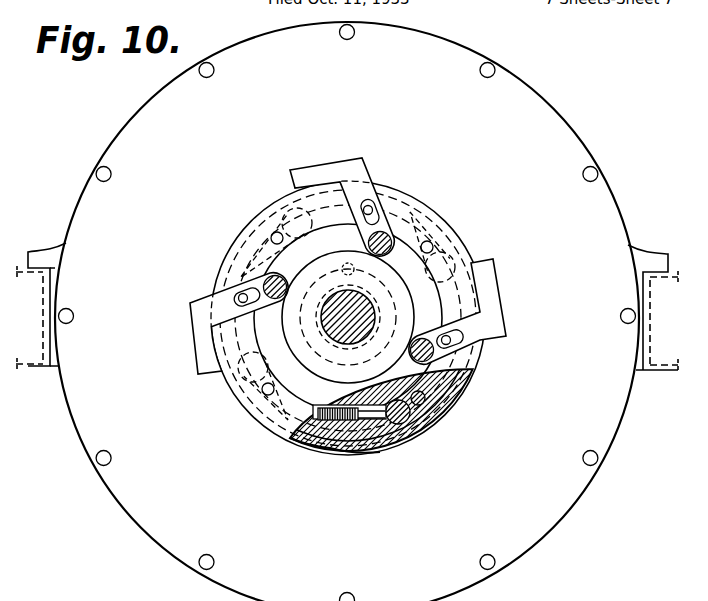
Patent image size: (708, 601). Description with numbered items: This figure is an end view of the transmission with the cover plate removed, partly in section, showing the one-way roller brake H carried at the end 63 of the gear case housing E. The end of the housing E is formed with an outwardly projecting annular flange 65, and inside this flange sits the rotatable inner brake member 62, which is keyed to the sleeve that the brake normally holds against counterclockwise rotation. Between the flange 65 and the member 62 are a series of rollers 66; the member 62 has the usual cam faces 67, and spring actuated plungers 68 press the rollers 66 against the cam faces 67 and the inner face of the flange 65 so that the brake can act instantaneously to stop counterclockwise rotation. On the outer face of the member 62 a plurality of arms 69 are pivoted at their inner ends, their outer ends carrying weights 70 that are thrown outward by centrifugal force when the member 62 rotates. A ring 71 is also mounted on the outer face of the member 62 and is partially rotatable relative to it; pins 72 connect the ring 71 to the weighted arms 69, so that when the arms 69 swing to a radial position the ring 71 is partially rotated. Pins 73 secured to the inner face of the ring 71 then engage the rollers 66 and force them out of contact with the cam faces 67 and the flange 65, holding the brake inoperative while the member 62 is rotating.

The gear case housing E is at (528, 91).
The end of the gear case housing 63 is at (515, 526).
The ring 71 is at (457, 237).
The pins 73 is at (263, 393).
The weights 70 is at (312, 163).
The arms 69 is at (371, 190).
The pins 72 is at (376, 208).
The inner member of roller-actuated one-way brake 62 is at (464, 388).
The brake H is at (467, 407).
The cam faces 67 is at (428, 413).
The rollers 66 is at (408, 426).
The annular flange 65 is at (313, 446).
The spring actuated plungers 68 is at (357, 450).